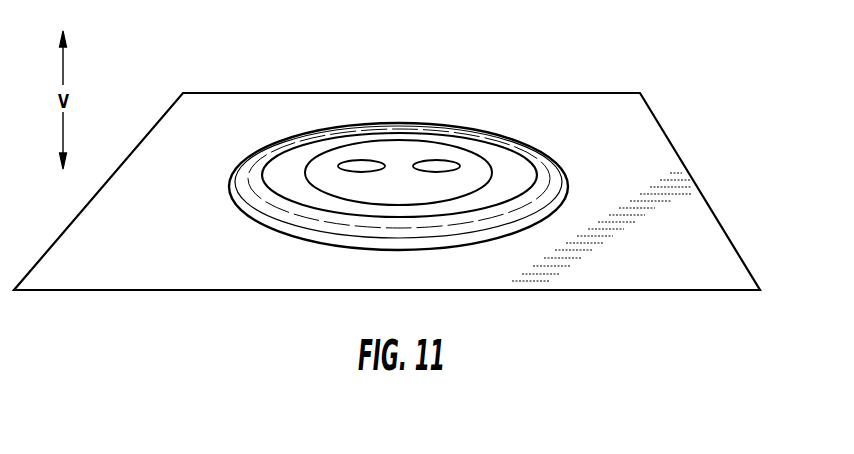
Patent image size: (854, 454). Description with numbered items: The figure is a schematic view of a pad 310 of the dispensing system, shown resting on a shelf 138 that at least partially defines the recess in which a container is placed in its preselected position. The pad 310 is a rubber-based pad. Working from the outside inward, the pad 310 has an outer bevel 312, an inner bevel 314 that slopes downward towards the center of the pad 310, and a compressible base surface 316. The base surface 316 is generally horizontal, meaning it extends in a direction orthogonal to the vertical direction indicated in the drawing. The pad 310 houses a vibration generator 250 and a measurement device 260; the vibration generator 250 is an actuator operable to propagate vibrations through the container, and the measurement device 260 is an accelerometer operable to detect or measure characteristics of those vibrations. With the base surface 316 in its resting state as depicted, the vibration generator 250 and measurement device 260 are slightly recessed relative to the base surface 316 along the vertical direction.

The pad 310 is at (367, 132).
The outer bevel 312 is at (231, 189).
The inner bevel 314 is at (283, 167).
The compressible base surface 316 is at (397, 152).
The vibration generator 250 is at (355, 163).
The measurement device 260 is at (438, 162).
The shelf 138 is at (650, 178).